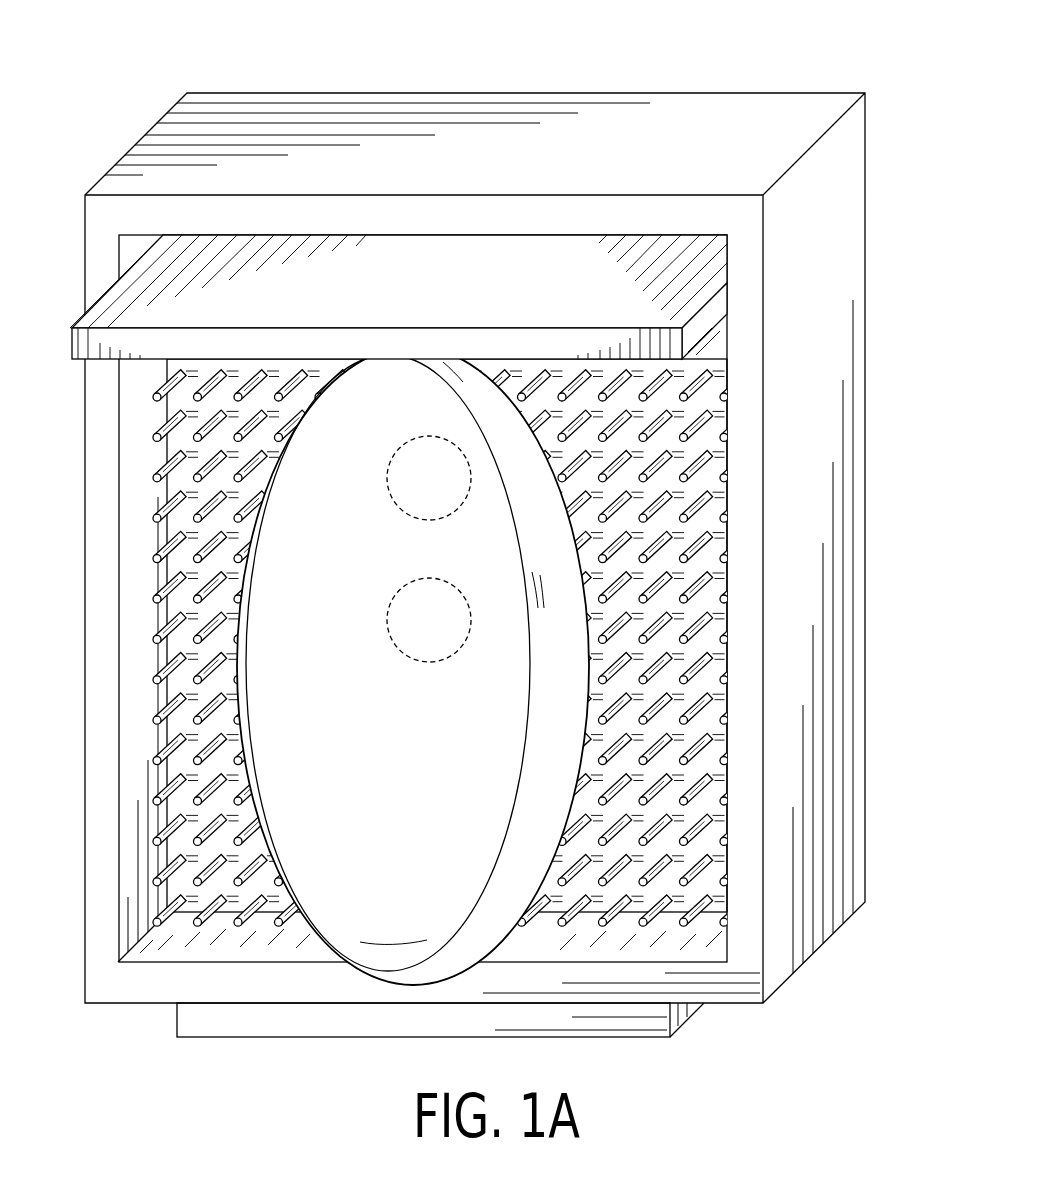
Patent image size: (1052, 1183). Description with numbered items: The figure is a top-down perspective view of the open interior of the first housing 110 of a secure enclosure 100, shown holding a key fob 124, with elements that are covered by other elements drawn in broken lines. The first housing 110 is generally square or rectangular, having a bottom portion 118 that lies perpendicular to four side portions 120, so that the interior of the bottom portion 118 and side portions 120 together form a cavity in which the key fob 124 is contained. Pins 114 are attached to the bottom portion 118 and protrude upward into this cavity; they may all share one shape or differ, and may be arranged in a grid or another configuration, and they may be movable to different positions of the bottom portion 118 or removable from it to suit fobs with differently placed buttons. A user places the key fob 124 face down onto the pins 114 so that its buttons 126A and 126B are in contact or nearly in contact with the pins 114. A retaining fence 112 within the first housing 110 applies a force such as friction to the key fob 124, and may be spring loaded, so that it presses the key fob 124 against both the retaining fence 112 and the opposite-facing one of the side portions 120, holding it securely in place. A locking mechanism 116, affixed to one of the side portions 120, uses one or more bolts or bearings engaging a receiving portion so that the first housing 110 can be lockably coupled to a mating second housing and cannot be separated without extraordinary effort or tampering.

The secure enclosure 100 is at (484, 570).
The first housing 110 is at (141, 1008).
The retaining fence 112 is at (388, 284).
The pins 114 is at (163, 603).
The locking mechanism 116 is at (512, 1040).
The bottom portion 118 is at (672, 640).
The side portions 120 is at (644, 237).
The key fob 124 is at (355, 975).
The button 126A is at (391, 498).
The button 126B is at (398, 650).